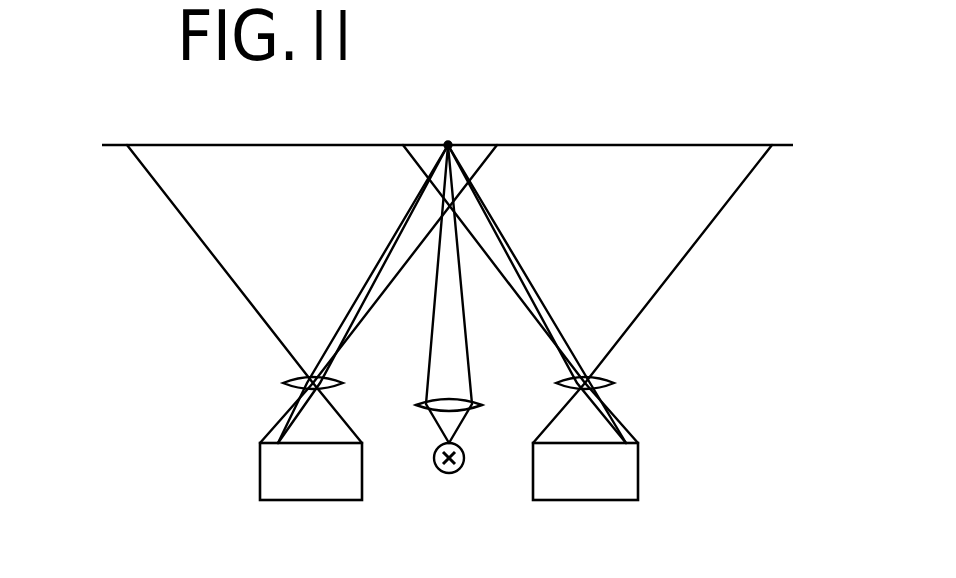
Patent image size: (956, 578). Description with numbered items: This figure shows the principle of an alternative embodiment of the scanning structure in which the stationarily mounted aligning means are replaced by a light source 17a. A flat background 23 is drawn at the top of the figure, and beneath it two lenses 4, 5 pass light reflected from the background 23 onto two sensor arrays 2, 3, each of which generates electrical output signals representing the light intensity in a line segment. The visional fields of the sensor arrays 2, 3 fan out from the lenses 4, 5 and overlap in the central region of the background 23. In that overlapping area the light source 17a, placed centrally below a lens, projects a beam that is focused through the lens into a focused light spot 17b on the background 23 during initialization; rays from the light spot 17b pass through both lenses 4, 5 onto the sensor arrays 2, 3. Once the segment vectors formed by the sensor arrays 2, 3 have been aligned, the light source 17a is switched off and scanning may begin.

The sensor array 2 is at (260, 443).
The sensor array 3 is at (638, 443).
The lens 4 is at (286, 384).
The lens 5 is at (613, 383).
The light source 17a is at (449, 473).
The focused light spot 17b is at (449, 143).
The background 23 is at (742, 130).